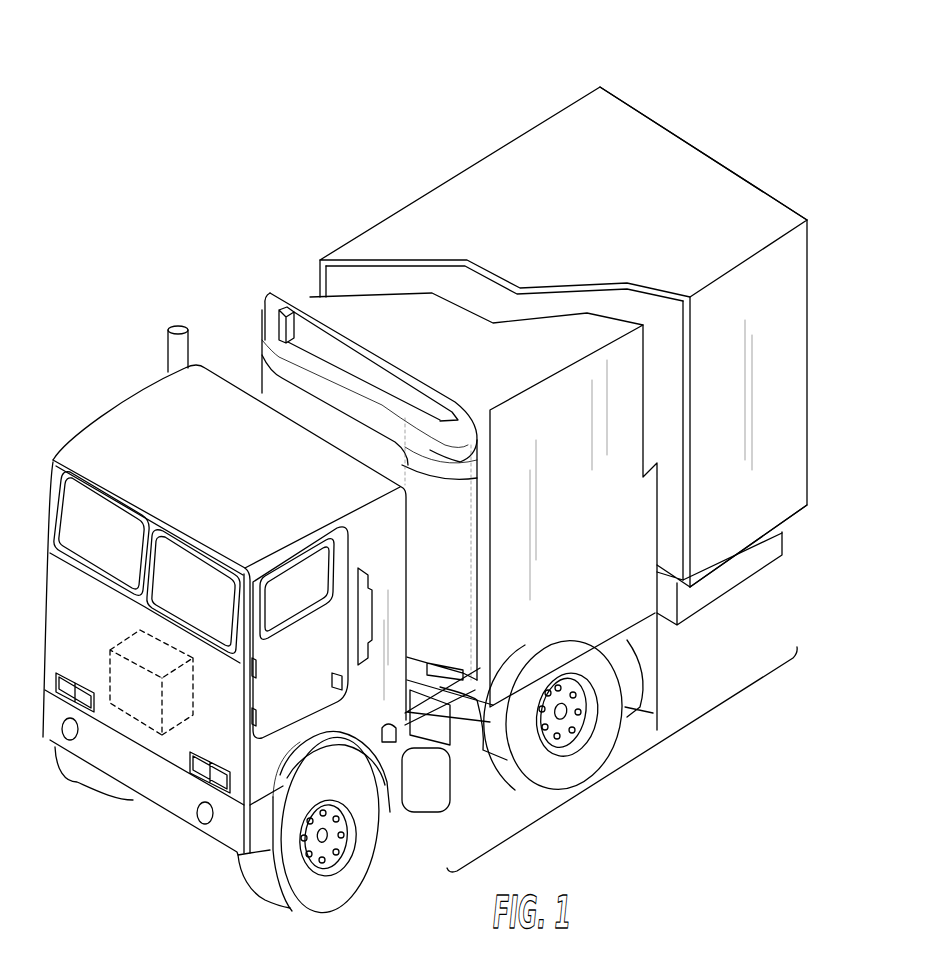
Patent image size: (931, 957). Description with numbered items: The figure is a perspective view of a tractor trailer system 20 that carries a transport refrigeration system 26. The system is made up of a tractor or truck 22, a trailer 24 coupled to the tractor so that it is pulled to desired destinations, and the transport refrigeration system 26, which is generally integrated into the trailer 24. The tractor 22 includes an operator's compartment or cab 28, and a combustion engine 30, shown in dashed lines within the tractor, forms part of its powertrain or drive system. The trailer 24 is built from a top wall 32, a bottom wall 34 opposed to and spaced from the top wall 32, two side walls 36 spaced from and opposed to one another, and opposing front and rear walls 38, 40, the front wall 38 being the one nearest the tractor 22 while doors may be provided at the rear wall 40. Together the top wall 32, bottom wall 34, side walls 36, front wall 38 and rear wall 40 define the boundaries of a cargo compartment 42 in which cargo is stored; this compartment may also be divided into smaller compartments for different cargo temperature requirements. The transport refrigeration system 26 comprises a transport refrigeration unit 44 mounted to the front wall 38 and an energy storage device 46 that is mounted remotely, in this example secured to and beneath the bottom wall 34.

The tractor trailer system 20 is at (233, 40).
The tractor 22 is at (98, 420).
The trailer 24 is at (434, 180).
The transport refrigeration system 26 is at (643, 758).
The cab 28 is at (303, 592).
The combustion engine 30 is at (130, 717).
The top wall 32 is at (537, 138).
The bottom wall 34 is at (790, 513).
The side walls 36 is at (798, 313).
The front wall 38 is at (460, 405).
The rear wall 40 is at (757, 183).
The cargo compartment 42 is at (608, 300).
The transport refrigeration unit 44 is at (284, 296).
The energy storage device 46 is at (693, 597).